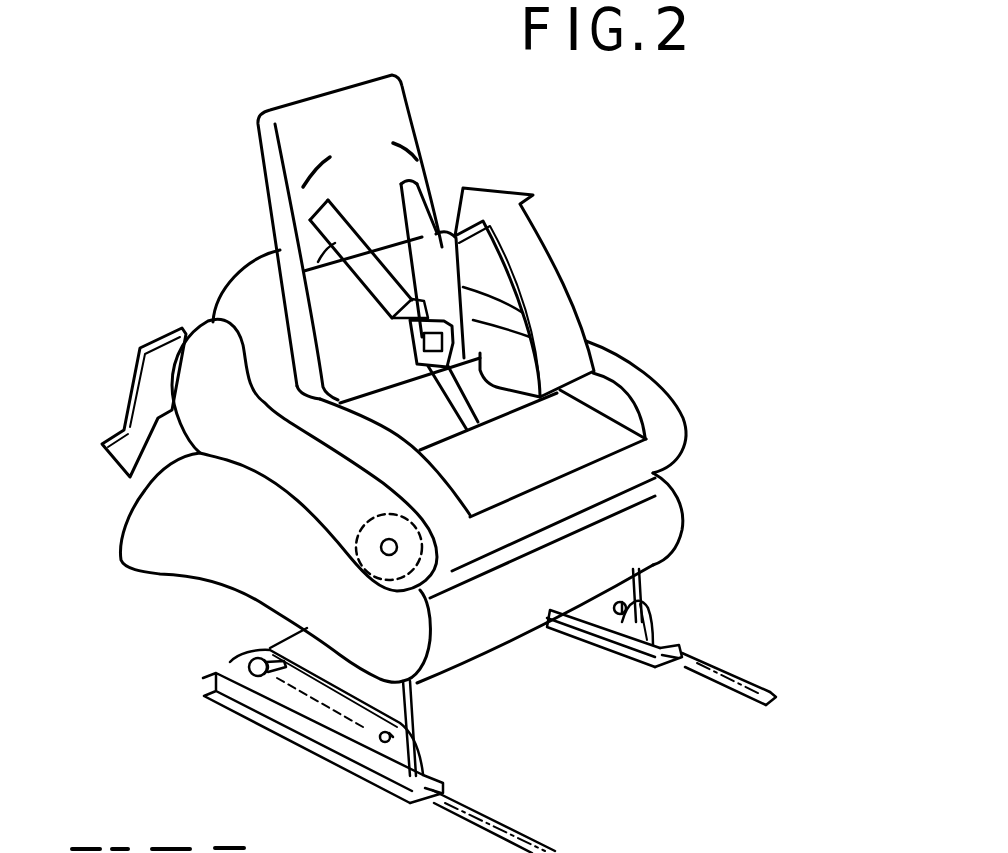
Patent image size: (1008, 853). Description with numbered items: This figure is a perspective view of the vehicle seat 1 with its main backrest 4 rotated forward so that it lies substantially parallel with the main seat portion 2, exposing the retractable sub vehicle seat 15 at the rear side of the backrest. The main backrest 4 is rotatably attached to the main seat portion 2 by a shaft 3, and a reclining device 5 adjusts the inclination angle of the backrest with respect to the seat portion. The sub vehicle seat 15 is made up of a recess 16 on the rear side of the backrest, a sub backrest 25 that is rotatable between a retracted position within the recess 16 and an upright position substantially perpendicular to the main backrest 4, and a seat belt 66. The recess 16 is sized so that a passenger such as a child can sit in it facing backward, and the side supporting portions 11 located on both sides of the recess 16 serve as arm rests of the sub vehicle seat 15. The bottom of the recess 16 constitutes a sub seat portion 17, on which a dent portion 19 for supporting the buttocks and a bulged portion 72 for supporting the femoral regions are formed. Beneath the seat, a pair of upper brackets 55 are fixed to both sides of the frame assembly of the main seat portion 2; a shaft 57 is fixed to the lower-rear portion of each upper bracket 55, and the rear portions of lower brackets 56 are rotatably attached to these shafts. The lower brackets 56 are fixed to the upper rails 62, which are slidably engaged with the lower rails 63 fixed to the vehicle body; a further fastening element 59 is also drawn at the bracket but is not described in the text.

The vehicle seat 1 is at (122, 557).
The main seat portion 2 is at (679, 527).
The shaft 3 is at (382, 555).
The main backrest 4 is at (654, 368).
The reclining device 5 is at (360, 509).
The side supporting portions 11 is at (323, 418).
The sub vehicle seat 15 is at (590, 262).
The recess 16 is at (580, 430).
The sub seat portion 17 is at (547, 445).
The dent portion 19 is at (430, 412).
The sub backrest 25 is at (272, 199).
The upper brackets 55 is at (414, 700).
The lower brackets 56 is at (307, 687).
The shaft 57 is at (381, 746).
The bolt 59 is at (242, 682).
The upper rails 62 is at (323, 753).
The lower rails 63 is at (534, 835).
The seat belt 66 is at (368, 266).
The bulged portion 72 is at (497, 467).